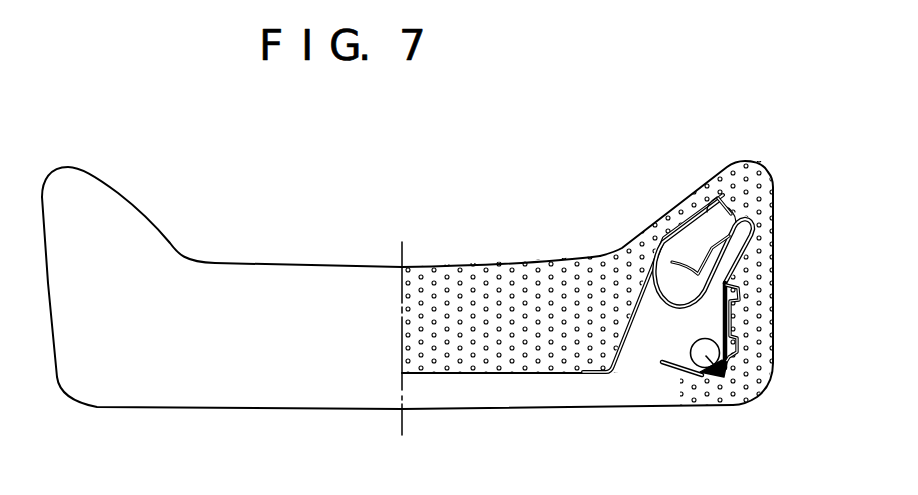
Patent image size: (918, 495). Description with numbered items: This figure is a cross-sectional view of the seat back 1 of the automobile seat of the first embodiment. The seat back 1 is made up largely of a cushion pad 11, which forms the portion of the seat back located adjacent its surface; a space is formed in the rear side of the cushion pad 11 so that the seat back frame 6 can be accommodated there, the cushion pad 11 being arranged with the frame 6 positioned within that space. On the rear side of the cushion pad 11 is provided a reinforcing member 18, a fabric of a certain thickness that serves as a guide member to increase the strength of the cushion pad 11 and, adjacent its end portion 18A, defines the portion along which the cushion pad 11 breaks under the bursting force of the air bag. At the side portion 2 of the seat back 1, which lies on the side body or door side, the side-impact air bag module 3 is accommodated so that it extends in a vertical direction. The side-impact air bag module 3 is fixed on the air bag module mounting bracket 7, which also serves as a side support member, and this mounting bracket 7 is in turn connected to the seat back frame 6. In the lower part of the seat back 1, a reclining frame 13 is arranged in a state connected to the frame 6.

The seat back 1 is at (483, 280).
The cushion pad 11 is at (553, 280).
The reinforcing member 18 is at (625, 283).
The end portion of the reinforcing member 18A is at (733, 168).
The side portion 2 is at (711, 188).
The side-impact air bag module 3 is at (724, 206).
The air bag module mounting bracket 7 is at (746, 250).
The reclining frame 13 is at (735, 329).
The seat back frame 6 is at (712, 375).